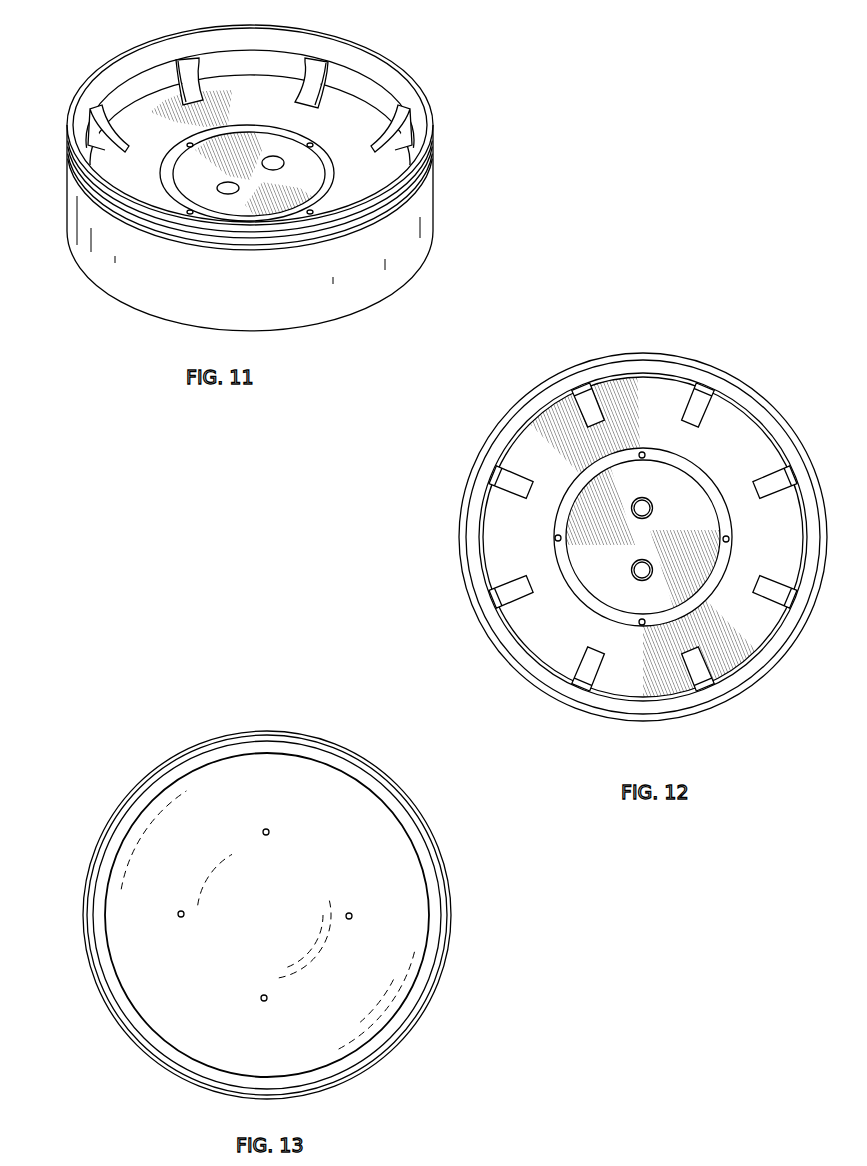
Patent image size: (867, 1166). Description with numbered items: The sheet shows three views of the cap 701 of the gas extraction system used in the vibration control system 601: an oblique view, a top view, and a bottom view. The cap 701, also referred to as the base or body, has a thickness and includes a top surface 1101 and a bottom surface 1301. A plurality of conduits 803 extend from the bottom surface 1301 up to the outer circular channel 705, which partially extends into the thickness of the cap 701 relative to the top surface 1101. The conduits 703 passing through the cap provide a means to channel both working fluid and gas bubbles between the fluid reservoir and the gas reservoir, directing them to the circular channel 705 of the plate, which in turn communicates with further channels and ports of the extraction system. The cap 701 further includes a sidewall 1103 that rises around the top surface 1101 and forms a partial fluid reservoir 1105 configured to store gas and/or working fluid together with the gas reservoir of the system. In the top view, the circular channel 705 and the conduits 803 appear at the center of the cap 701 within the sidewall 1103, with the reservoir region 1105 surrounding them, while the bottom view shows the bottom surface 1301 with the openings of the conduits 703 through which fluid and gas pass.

In FIG. 11, the cap 701 is at (464, 57).
In FIG. 12, the cap 701 is at (410, 469).
In FIG. 13, the cap 701 is at (464, 1053).
In FIG. 11, the conduits 703 is at (314, 147).
In FIG. 12, the conduits 703 is at (555, 541).
In FIG. 13, the conduits 703 is at (262, 830).
In FIG. 11, the outer circular channel 705 is at (333, 202).
In FIG. 12, the outer circular channel 705 is at (703, 608).
In FIG. 11, the conduits 803 is at (217, 188).
In FIG. 12, the conduits 803 is at (649, 517).
In FIG. 12, the vibration control system 601 is at (662, 433).
In FIG. 11, the top surface 1101 is at (275, 112).
In FIG. 11, the sidewall 1103 is at (432, 186).
In FIG. 13, the sidewall 1103 is at (107, 1005).
In FIG. 11, the partial fluid reservoir 1105 is at (160, 105).
In FIG. 13, the bottom surface 1301 is at (307, 799).